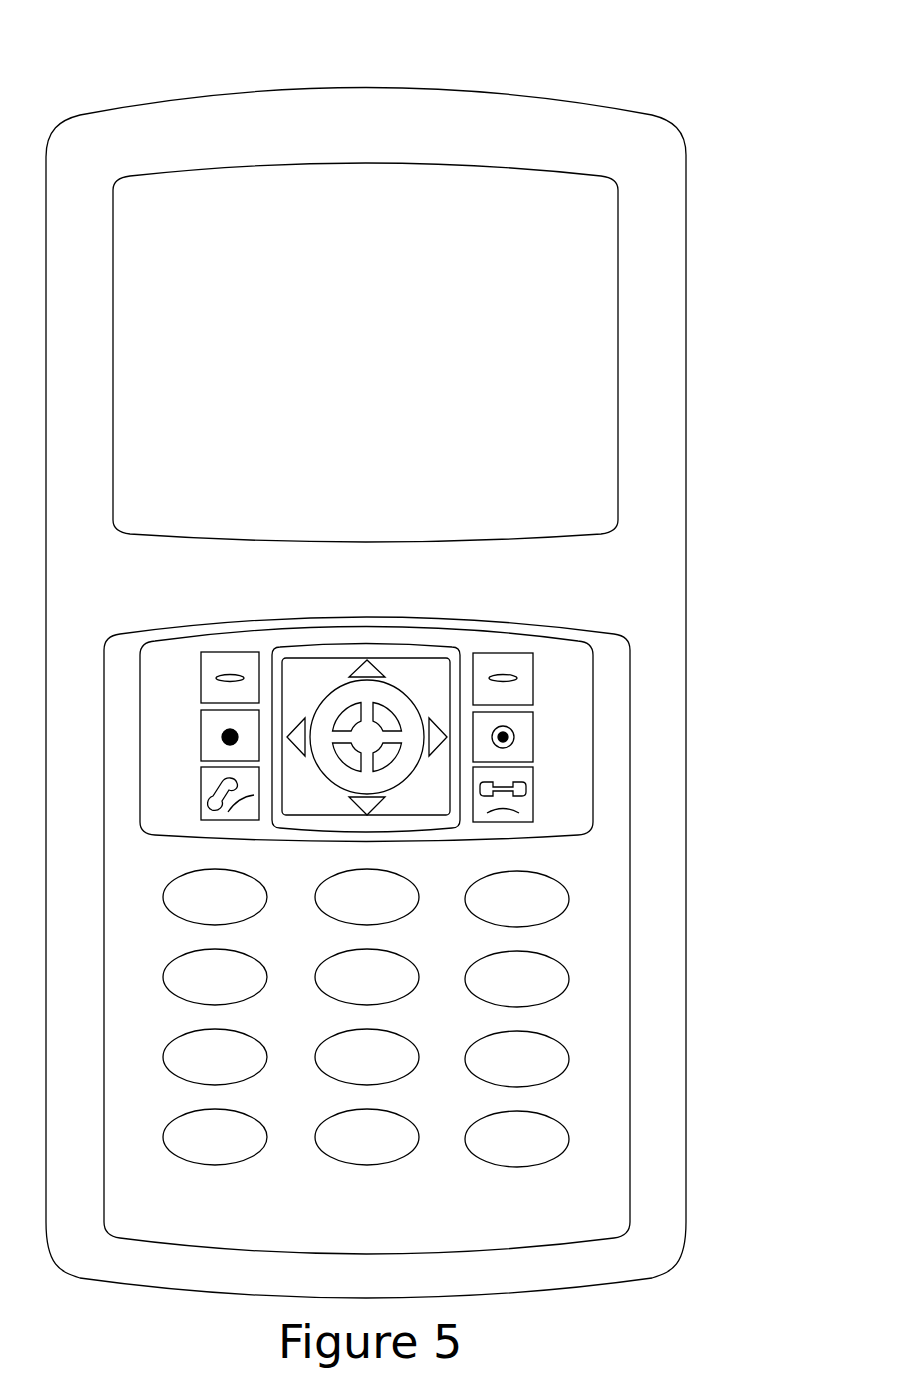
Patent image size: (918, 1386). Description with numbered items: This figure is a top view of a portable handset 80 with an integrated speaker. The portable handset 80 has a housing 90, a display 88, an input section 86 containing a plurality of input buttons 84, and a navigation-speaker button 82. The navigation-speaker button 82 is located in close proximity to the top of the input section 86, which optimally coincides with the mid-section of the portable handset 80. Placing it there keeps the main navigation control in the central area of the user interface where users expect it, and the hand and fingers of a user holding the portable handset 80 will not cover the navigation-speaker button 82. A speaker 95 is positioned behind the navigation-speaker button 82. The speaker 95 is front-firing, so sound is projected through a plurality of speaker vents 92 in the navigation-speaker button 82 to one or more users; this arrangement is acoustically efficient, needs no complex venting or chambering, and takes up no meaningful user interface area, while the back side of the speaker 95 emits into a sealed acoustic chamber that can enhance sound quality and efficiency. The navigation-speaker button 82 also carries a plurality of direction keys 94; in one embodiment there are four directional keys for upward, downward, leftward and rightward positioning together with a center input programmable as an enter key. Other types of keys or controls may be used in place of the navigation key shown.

The portable handset 80 is at (433, 659).
The navigation-speaker button 82 is at (316, 699).
The input buttons 84 is at (570, 899).
The input section 86 is at (612, 657).
The display 88 is at (619, 356).
The housing 90 is at (687, 692).
The speaker vents 92 is at (343, 717).
The direction keys 94 is at (373, 663).
The speaker 95 is at (343, 755).